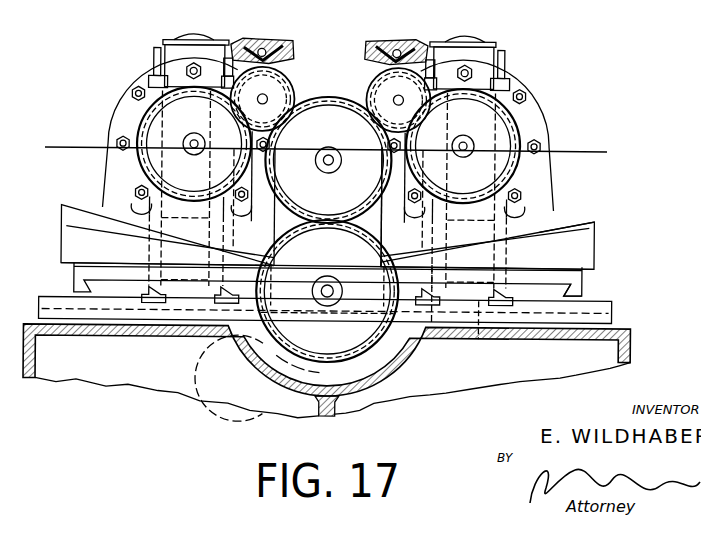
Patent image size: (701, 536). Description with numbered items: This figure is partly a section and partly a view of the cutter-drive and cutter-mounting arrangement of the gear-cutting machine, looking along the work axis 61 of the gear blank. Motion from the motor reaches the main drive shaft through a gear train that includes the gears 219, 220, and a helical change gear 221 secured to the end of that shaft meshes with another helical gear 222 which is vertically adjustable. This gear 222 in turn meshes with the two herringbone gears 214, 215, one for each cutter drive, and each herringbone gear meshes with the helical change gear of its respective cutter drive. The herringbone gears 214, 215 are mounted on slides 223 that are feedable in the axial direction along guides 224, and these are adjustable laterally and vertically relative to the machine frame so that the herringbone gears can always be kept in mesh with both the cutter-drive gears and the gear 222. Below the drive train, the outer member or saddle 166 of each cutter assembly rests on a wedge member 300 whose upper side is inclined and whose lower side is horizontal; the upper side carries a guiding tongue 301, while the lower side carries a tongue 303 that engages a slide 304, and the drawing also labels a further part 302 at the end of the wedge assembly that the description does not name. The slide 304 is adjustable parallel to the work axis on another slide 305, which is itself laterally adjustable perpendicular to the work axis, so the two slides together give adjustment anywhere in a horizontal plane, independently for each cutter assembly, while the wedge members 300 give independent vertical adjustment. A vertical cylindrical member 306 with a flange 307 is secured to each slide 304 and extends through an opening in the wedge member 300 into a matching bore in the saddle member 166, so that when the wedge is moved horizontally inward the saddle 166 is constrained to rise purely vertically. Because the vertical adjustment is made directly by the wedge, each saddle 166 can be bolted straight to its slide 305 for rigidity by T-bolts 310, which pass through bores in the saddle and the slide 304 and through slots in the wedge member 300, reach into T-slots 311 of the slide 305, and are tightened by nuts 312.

The axis 61 is at (345, 161).
The outer member or saddle 166 is at (545, 176).
The herringbone gear 214 is at (374, 86).
The herringbone gear 215 is at (284, 62).
The gear 219 is at (200, 372).
The gear 220 is at (328, 369).
The helical change gear 221 is at (346, 225).
The helical gear 222 is at (332, 98).
The slide 223 is at (424, 32).
The guide 224 is at (382, 43).
The wedge member 300 is at (562, 250).
The guiding tongue 301 is at (585, 222).
The plate 302 is at (594, 272).
The tongue 303 is at (587, 275).
The slide 304 is at (585, 303).
The slide 305 is at (626, 334).
The vertical cylindrical member 306 is at (432, 323).
The flange 307 is at (478, 338).
The T-bolt 310 is at (505, 58).
The T-slot 311 is at (497, 306).
The nut 312 is at (514, 81).